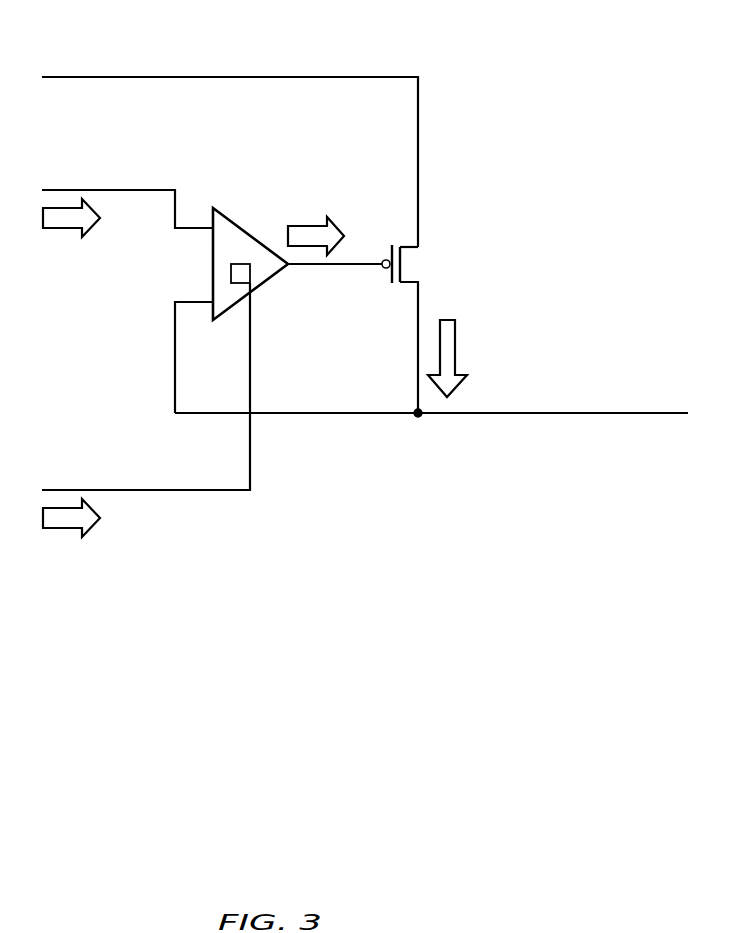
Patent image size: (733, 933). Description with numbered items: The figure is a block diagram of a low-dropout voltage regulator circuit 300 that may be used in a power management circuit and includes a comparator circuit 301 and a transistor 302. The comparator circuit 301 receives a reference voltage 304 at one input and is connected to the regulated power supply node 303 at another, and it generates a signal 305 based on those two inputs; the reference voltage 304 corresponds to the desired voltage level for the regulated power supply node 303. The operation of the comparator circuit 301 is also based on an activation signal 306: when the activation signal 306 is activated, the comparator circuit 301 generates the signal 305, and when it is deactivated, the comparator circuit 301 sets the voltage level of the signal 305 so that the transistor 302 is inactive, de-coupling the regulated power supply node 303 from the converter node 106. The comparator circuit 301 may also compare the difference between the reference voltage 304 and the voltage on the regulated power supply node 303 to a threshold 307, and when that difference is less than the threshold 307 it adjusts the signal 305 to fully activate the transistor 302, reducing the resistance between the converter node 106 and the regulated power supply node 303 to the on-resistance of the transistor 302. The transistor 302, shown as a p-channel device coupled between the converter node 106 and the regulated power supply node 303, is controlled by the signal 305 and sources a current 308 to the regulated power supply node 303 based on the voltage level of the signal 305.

The converter node 106 is at (230, 135).
The voltage regulator circuit 300 is at (635, 115).
The comparator circuit 301 is at (243, 203).
The transistor 302 is at (420, 265).
The regulated power supply node 303 is at (432, 375).
The reference voltage 304 is at (72, 248).
The signal 305 is at (307, 223).
The activation signal 306 is at (72, 547).
The threshold 307 is at (243, 271).
The current 308 is at (460, 336).